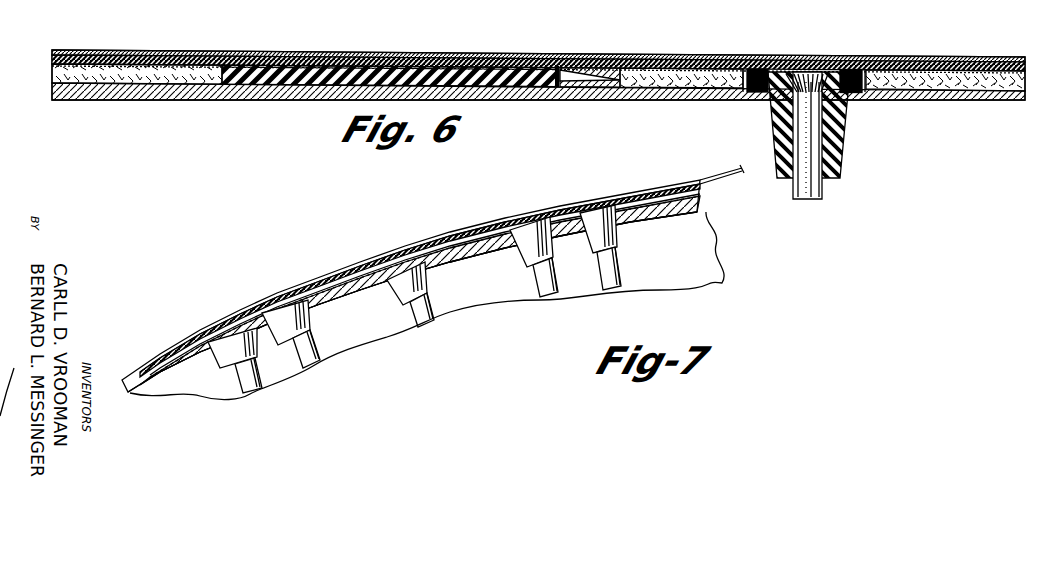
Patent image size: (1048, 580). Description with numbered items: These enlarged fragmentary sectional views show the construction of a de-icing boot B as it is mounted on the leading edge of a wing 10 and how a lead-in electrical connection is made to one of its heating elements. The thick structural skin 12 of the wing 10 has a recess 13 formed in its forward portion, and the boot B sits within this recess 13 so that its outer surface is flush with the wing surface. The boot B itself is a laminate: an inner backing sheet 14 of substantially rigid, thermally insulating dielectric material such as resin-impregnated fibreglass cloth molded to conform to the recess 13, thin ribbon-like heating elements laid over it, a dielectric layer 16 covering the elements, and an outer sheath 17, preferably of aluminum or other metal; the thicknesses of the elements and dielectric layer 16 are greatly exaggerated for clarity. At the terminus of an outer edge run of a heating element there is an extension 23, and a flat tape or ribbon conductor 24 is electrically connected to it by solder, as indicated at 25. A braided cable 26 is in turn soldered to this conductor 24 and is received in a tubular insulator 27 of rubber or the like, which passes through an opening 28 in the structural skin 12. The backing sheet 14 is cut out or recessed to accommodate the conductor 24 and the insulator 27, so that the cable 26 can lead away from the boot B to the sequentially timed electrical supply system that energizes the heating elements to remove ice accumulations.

In FIG. 6, the wing 10 is at (977, 103).
In FIG. 7, the wing 10 is at (696, 217).
In FIG. 7, the skin 12 is at (196, 370).
In FIG. 6, the recess 13 is at (927, 100).
In FIG. 7, the recess 13 is at (467, 250).
In FIG. 6, the backing sheet 14 is at (102, 84).
In FIG. 7, the backing sheet 14 is at (150, 384).
In FIG. 6, the dielectric layer 16 is at (152, 54).
In FIG. 7, the dielectric layer 16 is at (630, 190).
In FIG. 6, the outer sheath 17 is at (90, 51).
In FIG. 7, the outer sheath 17 is at (660, 182).
In FIG. 6, the extension 23 is at (468, 62).
In FIG. 6, the conductor 24 is at (662, 64).
In FIG. 7, the conductor 24 is at (284, 301).
In FIG. 6, the solder connection 25 is at (557, 67).
In FIG. 6, the braided cable 26 is at (818, 189).
In FIG. 7, the braided cable 26 is at (535, 283).
In FIG. 6, the tubular insulator 27 is at (832, 144).
In FIG. 7, the tubular insulator 27 is at (393, 298).
In FIG. 6, the opening 28 is at (800, 134).
In FIG. 6, the boot B is at (946, 52).